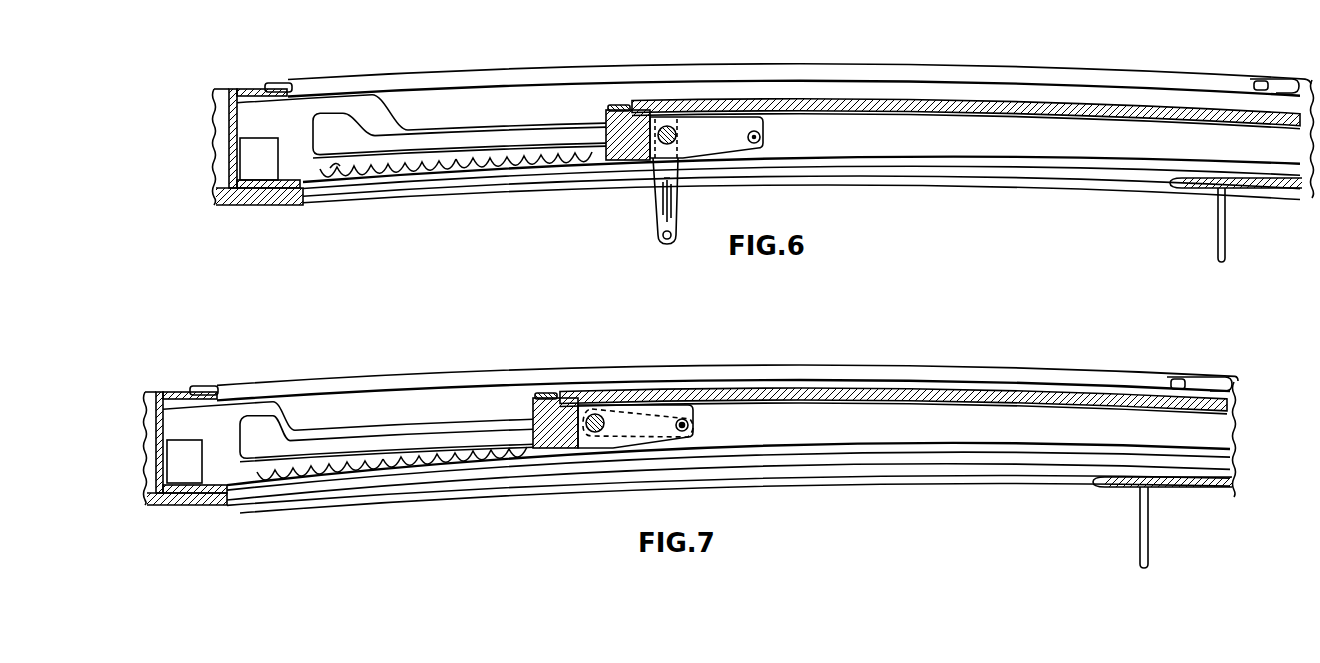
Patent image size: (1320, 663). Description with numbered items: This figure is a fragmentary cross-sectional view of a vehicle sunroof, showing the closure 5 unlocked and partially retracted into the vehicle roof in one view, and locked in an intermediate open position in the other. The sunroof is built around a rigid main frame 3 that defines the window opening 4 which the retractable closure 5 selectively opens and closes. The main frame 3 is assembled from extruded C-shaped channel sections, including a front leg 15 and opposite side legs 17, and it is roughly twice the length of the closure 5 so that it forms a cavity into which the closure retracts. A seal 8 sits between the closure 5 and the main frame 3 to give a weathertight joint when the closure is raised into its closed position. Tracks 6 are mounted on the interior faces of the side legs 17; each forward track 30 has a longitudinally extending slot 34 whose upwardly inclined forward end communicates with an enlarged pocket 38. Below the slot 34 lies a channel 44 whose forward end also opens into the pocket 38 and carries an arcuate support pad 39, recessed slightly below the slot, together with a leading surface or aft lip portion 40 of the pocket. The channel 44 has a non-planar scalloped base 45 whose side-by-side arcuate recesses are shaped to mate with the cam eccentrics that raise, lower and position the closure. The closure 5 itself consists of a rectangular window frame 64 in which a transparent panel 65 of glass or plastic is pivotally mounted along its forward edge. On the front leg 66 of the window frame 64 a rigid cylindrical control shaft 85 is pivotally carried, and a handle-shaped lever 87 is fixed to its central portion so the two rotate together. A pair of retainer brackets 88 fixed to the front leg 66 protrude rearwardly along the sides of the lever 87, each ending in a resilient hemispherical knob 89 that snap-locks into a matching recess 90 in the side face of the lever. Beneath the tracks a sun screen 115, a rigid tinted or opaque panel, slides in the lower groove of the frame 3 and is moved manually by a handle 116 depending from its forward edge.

In FIG. 6, the main frame 3 is at (223, 170).
In FIG. 7, the main frame 3 is at (148, 458).
In FIG. 6, the opening 4 is at (484, 105).
In FIG. 7, the opening 4 is at (411, 404).
In FIG. 6, the closure 5 is at (894, 91).
In FIG. 7, the closure 5 is at (904, 388).
In FIG. 6, the tracks 6 is at (299, 106).
In FIG. 7, the tracks 6 is at (219, 406).
In FIG. 6, the seal 8 is at (613, 106).
In FIG. 7, the seal 8 is at (541, 395).
In FIG. 7, the front leg 15 is at (147, 430).
In FIG. 6, the side legs 17 is at (417, 97).
In FIG. 7, the side legs 17 is at (355, 400).
In FIG. 6, the forward track 30 is at (358, 123).
In FIG. 7, the forward track 30 is at (283, 428).
In FIG. 6, the slot 34 is at (424, 141).
In FIG. 7, the slot 34 is at (372, 442).
In FIG. 6, the pocket 38 is at (317, 135).
In FIG. 7, the pocket 38 is at (242, 440).
In FIG. 6, the support pad 39 is at (312, 160).
In FIG. 7, the support pad 39 is at (240, 460).
In FIG. 6, the aft lip portion 40 is at (340, 164).
In FIG. 6, the channel 44 is at (402, 172).
In FIG. 7, the channel 44 is at (342, 462).
In FIG. 6, the scalloped base 45 is at (468, 166).
In FIG. 7, the scalloped base 45 is at (395, 470).
In FIG. 6, the window frame 64 is at (968, 142).
In FIG. 7, the window frame 64 is at (898, 436).
In FIG. 6, the transparent panel 65 is at (1014, 93).
In FIG. 7, the transparent panel 65 is at (893, 401).
In FIG. 6, the front leg 66 is at (606, 127).
In FIG. 7, the front leg 66 is at (533, 418).
In FIG. 6, the control shaft 85 is at (680, 133).
In FIG. 7, the control shaft 85 is at (598, 412).
In FIG. 6, the lever 87 is at (655, 201).
In FIG. 7, the lever 87 is at (640, 380).
In FIG. 6, the retainer brackets 88 is at (708, 152).
In FIG. 7, the retainer brackets 88 is at (628, 448).
In FIG. 6, the knob 89 is at (762, 135).
In FIG. 7, the knob 89 is at (682, 425).
In FIG. 6, the recess 90 is at (662, 237).
In FIG. 6, the sun screen 115 is at (1183, 190).
In FIG. 7, the sun screen 115 is at (1103, 489).
In FIG. 6, the handle 116 is at (1227, 228).
In FIG. 7, the handle 116 is at (1150, 533).